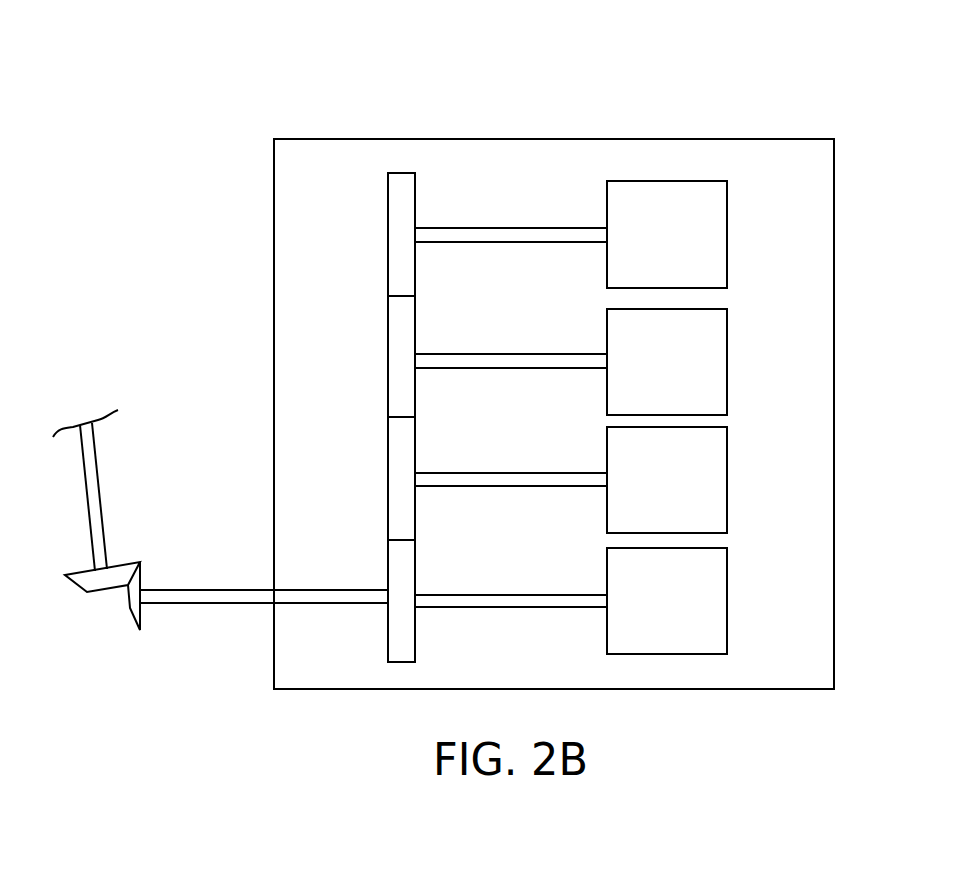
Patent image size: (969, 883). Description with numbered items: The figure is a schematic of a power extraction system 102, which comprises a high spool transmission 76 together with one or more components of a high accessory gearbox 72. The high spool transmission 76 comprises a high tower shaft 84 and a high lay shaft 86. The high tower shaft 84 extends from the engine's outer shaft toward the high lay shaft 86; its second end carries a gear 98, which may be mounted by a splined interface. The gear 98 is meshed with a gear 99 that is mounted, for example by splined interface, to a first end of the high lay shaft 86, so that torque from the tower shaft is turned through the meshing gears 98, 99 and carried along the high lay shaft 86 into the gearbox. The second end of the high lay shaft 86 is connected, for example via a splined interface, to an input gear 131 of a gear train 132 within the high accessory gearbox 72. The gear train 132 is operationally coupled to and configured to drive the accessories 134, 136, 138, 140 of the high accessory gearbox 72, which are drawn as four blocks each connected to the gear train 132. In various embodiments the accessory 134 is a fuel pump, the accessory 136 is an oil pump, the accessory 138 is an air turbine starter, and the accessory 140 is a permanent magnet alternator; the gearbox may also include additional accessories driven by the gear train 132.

The power extraction system 102 is at (205, 137).
The high accessory gearbox 72 is at (803, 155).
The high spool transmission 76 is at (102, 548).
The high tower shaft 84 is at (93, 498).
The high lay shaft 86 is at (230, 590).
The gear 98 is at (92, 585).
The gear 99 is at (133, 605).
The input gear 131 is at (390, 635).
The gear train 132 is at (347, 420).
The accessory 134 is at (571, 234).
The accessory 136 is at (571, 362).
The accessory 138 is at (571, 480).
The accessory 140 is at (571, 601).